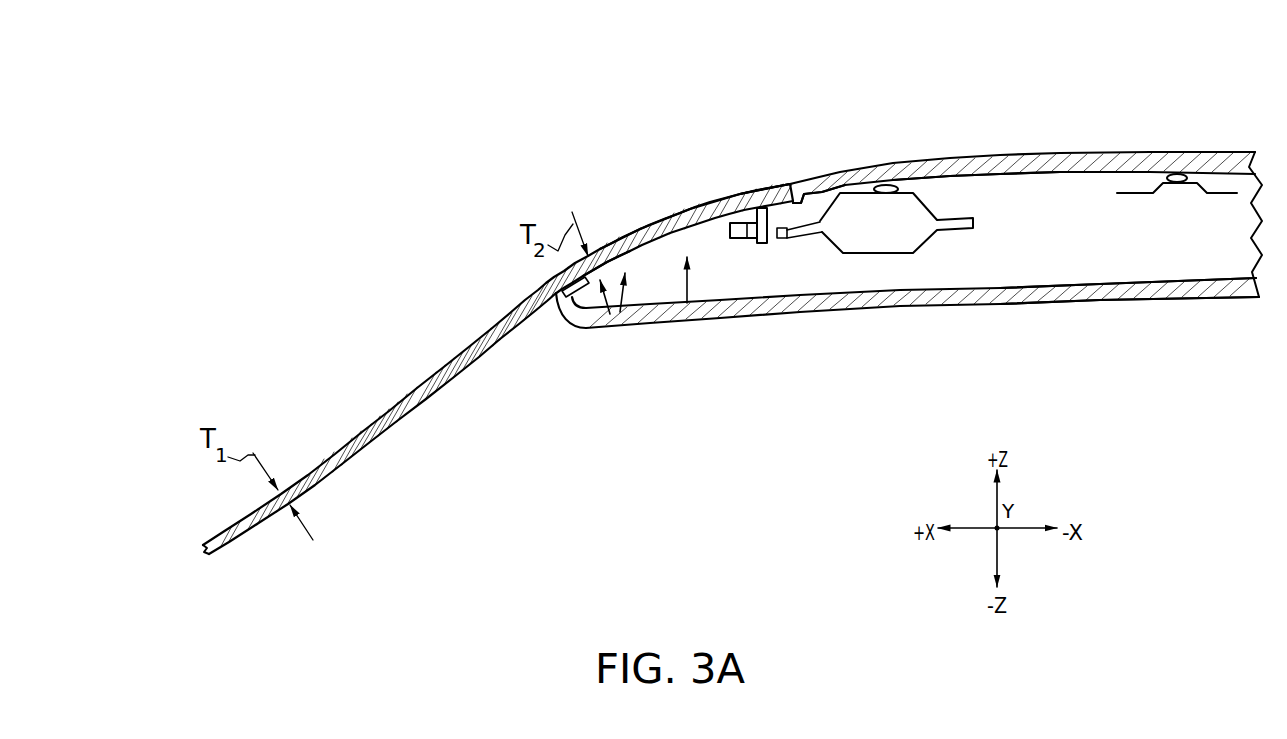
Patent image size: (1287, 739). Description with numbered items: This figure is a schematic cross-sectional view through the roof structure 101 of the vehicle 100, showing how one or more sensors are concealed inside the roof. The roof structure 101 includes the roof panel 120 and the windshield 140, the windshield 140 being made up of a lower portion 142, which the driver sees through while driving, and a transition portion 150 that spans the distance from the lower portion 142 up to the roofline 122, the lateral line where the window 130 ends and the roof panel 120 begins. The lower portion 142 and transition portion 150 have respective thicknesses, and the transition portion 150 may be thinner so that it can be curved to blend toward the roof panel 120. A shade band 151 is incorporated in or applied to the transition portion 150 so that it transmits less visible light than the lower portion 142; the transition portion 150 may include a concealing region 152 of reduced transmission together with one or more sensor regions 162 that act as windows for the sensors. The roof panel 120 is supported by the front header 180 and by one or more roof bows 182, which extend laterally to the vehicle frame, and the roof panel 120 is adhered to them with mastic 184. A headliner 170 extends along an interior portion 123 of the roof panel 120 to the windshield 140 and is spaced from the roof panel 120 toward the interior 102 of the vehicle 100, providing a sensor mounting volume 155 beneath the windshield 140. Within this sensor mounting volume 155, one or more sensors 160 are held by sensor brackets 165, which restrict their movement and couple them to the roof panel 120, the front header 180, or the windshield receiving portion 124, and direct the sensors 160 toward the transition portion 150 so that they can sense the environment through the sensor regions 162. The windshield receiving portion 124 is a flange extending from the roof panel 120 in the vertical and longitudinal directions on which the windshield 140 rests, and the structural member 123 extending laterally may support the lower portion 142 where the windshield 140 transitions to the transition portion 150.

The vehicle 100 is at (205, 150).
The roof structure 101 is at (418, 222).
The interior 102 is at (380, 494).
The roof panel 120 is at (1102, 135).
The roofline 122 is at (786, 181).
The interior portion 123 is at (1037, 178).
The windshield receiving portion 124 is at (793, 212).
The window 130 is at (340, 378).
The windshield 140 is at (405, 357).
The lower portion 142 is at (215, 538).
The transition portion 150 is at (638, 294).
The shade band 151 is at (727, 192).
The concealing region 152 is at (607, 246).
The sensor mounting volume 155 is at (700, 287).
The sensor 160 is at (747, 241).
The sensor region 162 is at (682, 209).
The sensor bracket 165 is at (764, 246).
The headliner 170 is at (1030, 305).
The front header 180 is at (880, 256).
The roof bow 182 is at (1223, 194).
The mastic 184 is at (884, 184).